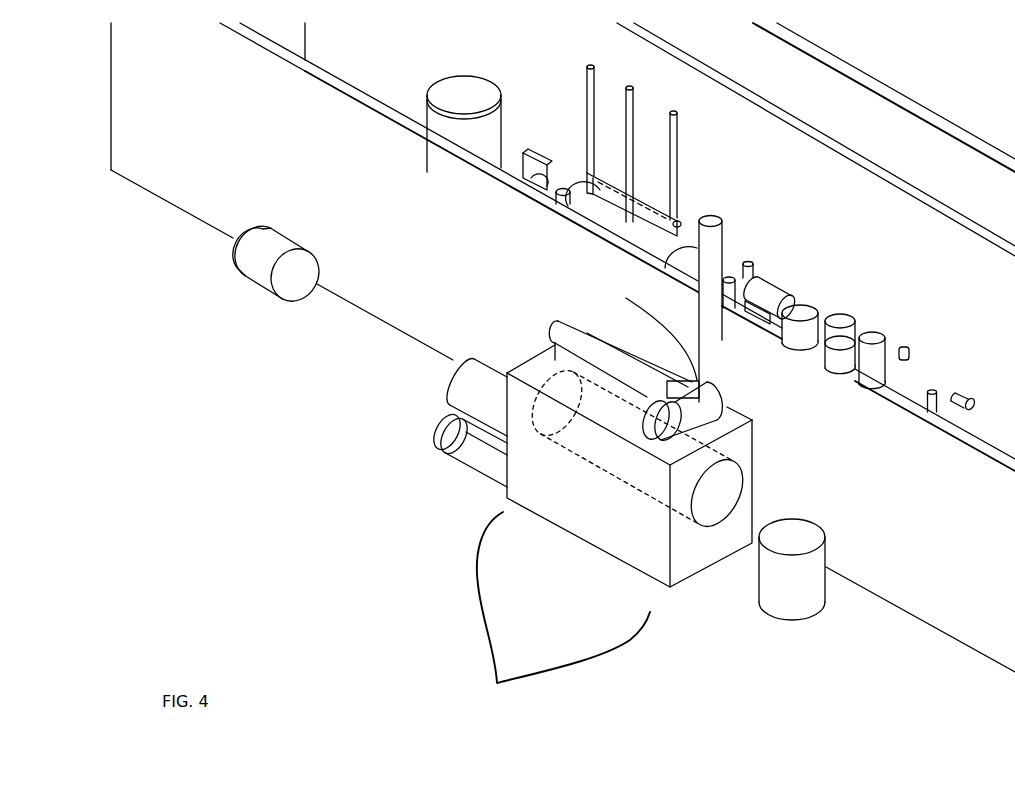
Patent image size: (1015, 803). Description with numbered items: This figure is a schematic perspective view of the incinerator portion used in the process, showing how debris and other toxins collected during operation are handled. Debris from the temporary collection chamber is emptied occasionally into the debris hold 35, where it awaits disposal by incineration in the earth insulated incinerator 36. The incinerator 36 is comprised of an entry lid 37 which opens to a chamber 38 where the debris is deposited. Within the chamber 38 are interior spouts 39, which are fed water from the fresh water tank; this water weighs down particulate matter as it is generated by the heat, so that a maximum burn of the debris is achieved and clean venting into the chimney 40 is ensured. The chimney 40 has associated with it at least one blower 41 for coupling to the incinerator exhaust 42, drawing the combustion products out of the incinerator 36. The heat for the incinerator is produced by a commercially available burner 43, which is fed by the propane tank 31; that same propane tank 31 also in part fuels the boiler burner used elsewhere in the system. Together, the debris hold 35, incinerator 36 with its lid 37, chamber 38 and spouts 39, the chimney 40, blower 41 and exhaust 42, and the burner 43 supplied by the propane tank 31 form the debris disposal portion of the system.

The propane tank 31 is at (258, 268).
The debris hold 35 is at (807, 598).
The earth insulated incinerator 36 is at (613, 530).
The entry lid 37 is at (725, 490).
The chamber 38 is at (577, 455).
The interior spouts 39 is at (550, 416).
The chimney 40 is at (560, 336).
The blower 41 is at (653, 420).
The incinerator exhaust 42 is at (708, 342).
The burner 43 is at (465, 387).